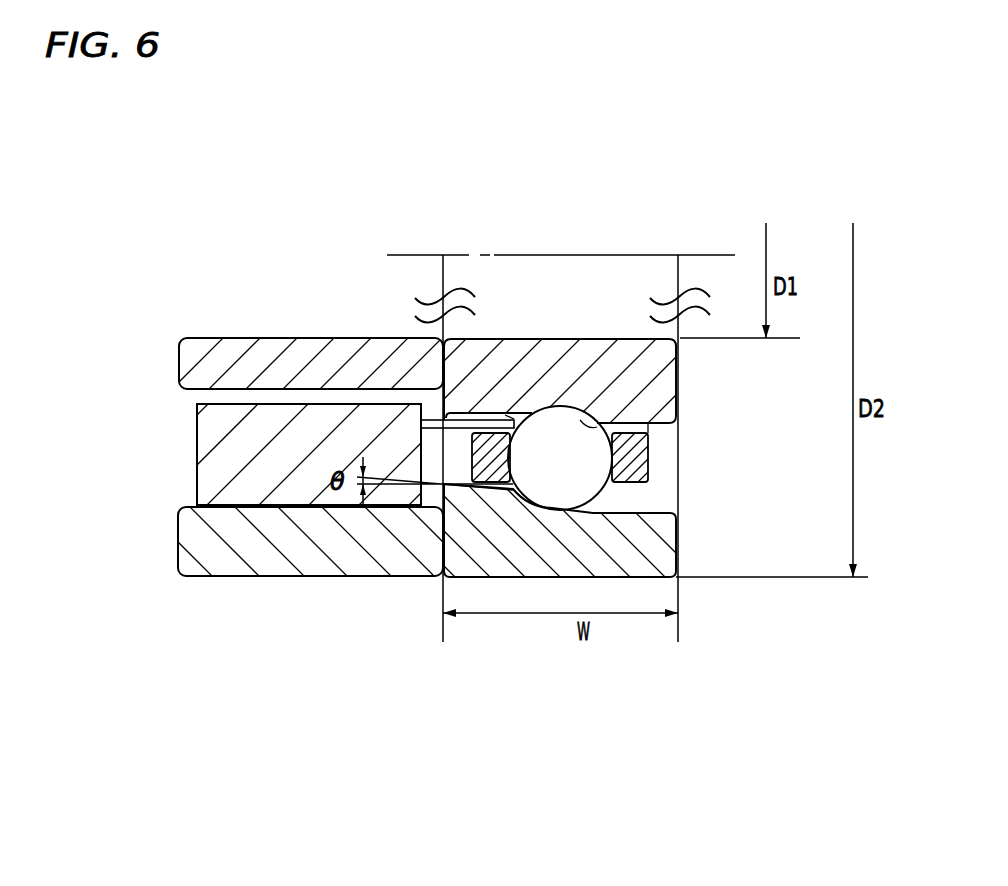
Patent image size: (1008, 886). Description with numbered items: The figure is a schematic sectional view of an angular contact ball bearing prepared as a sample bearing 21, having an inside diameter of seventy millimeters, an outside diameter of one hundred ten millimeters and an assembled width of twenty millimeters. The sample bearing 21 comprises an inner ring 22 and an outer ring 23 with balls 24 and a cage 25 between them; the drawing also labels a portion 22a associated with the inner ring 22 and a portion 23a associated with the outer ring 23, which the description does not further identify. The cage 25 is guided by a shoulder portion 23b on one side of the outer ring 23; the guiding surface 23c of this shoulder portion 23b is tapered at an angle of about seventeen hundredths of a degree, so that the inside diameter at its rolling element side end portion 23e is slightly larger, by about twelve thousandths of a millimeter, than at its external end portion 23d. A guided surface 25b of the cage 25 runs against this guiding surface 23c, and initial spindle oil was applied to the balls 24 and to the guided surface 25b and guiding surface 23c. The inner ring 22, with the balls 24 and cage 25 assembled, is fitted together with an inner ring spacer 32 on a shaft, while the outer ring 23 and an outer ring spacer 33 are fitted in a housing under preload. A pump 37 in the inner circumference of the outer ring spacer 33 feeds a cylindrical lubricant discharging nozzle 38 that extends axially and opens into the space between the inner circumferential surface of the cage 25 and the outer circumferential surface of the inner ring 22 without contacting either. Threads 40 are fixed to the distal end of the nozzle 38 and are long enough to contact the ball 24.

The sample bearing 21 is at (768, 628).
The inner ring 22 is at (640, 372).
The outer ring raceway groove 22a is at (580, 420).
The outer ring 23 is at (655, 548).
The inner ring raceway groove 23a is at (530, 506).
The shoulder portion 23b is at (514, 486).
The guiding surface 23c is at (504, 486).
The external end portion 23d is at (473, 492).
The rolling element side end portion 23e is at (517, 490).
The balls 24 is at (559, 420).
The cage 25 is at (645, 465).
The guided surface 25b is at (490, 488).
The inner ring spacer 32 is at (197, 363).
The outer ring spacer 33 is at (220, 557).
The pump 37 is at (225, 457).
The lubricant discharging nozzle 38 is at (435, 425).
The threads 40 is at (510, 415).